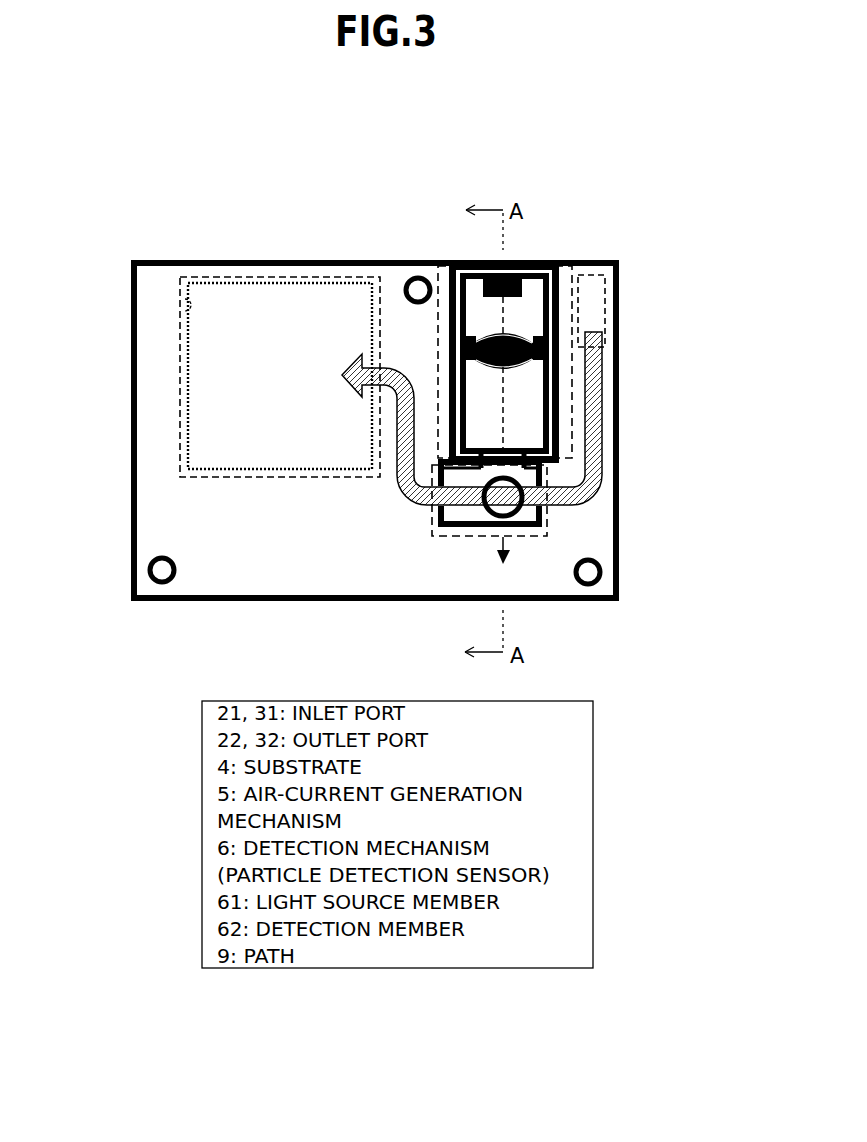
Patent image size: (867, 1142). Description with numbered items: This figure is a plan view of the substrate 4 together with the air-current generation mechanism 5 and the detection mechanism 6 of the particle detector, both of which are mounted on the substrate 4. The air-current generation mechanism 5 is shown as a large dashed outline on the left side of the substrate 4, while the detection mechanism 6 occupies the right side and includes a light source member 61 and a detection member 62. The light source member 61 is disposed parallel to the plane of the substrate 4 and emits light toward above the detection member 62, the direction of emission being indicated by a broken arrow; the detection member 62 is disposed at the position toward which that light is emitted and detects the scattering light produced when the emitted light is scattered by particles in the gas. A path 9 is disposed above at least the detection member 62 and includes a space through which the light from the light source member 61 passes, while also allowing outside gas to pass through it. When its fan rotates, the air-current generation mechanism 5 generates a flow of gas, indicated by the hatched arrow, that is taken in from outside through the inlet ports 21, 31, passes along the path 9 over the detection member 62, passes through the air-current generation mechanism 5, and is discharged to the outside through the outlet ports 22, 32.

The inlet port 21 is at (642, 311).
The inlet port 31 is at (595, 279).
The outlet port 22 is at (113, 313).
The outlet port 32 is at (185, 300).
The substrate 4 is at (358, 585).
The air-current generation mechanism 5 is at (200, 364).
The detection mechanism 6 is at (526, 415).
The light source member 61 is at (593, 365).
The detection member 62 is at (548, 517).
The path 9 is at (598, 456).